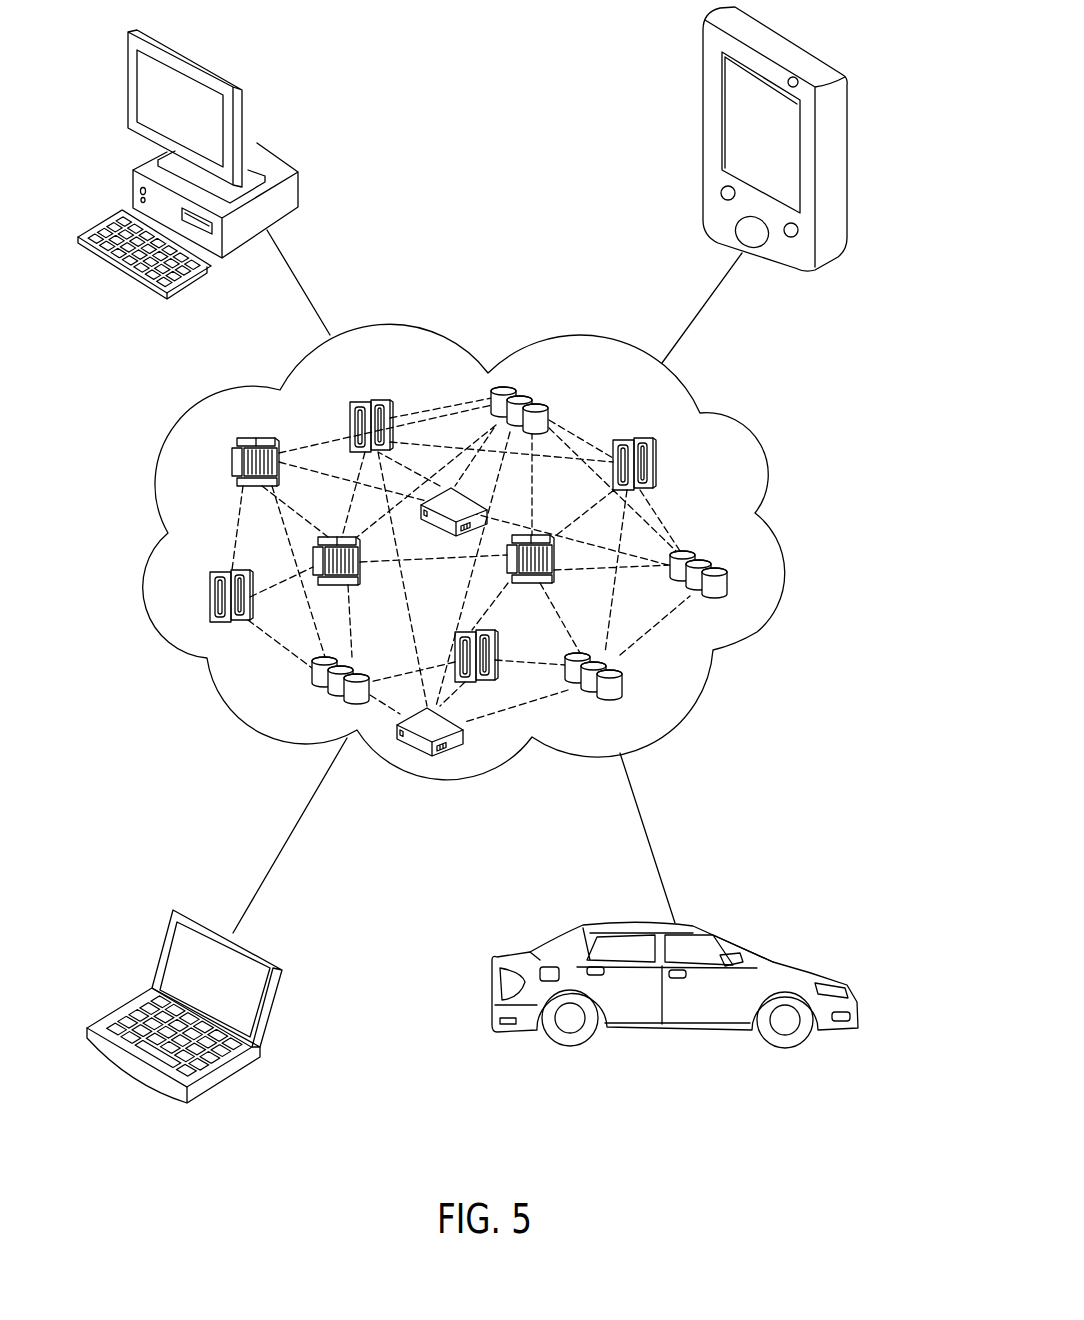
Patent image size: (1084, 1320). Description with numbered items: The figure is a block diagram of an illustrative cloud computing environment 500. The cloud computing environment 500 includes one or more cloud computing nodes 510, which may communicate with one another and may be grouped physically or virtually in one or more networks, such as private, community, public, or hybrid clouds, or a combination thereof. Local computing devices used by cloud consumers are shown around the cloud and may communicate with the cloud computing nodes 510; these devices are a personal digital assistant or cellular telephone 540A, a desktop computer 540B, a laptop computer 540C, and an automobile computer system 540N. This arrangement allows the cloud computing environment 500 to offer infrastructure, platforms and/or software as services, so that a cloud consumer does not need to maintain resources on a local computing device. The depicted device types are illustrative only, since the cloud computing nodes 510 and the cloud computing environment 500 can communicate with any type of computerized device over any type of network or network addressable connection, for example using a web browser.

The cloud computing environment 500 is at (757, 632).
The cloud computing nodes 510 is at (700, 488).
The personal digital assistant (PDA) or cellular telephone 540A is at (703, 87).
The desktop computer 540B is at (300, 190).
The laptop computer 540C is at (283, 978).
The automobile computer system 540N is at (857, 988).